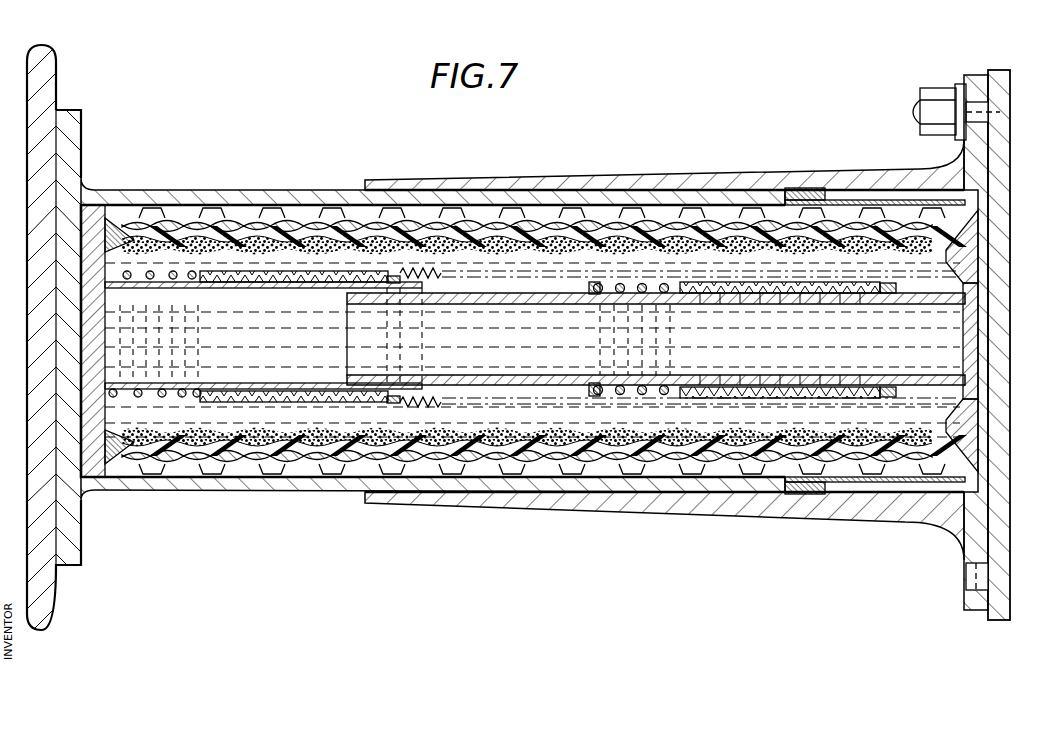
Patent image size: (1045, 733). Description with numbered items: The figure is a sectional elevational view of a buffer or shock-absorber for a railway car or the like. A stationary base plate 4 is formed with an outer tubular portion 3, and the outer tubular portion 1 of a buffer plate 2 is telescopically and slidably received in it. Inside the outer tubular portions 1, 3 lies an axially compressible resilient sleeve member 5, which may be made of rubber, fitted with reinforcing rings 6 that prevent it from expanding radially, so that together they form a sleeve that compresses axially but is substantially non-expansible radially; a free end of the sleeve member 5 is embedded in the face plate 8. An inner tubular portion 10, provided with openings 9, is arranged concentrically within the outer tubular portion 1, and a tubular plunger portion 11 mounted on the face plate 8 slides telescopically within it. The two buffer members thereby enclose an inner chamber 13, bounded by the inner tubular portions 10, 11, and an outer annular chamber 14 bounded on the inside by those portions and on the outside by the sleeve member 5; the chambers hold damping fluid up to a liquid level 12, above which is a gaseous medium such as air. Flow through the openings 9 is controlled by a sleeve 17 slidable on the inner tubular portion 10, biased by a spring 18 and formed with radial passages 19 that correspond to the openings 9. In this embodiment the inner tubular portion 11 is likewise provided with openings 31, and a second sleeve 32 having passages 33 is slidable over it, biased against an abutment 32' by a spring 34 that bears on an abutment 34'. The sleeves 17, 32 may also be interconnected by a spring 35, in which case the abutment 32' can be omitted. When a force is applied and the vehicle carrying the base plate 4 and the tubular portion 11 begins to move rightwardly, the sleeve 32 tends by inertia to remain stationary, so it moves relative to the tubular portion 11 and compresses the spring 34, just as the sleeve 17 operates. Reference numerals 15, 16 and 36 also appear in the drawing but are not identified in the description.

The outer tubular portion 1 is at (157, 482).
The buffer plate 2 is at (37, 450).
The outer tubular portion 3 is at (593, 504).
The stationary base plate 4 is at (997, 484).
The tubular resilient sleeve member 5 is at (438, 450).
The reinforcing rings 6 is at (283, 463).
The face plate 8 is at (973, 257).
The openings 9 is at (244, 283).
The inner tubular portion 10 is at (280, 285).
The tubular plunger portion 11 is at (480, 296).
The liquid level 12 is at (240, 246).
The inner chamber 13 is at (957, 340).
The outer annular chamber 14 is at (417, 240).
The upper corrugated tube 15 is at (357, 243).
The direction arrow 16 is at (125, 171).
The sleeve 17 is at (223, 403).
The spring 18 is at (110, 398).
The radial passages 19 is at (245, 402).
The openings 31 is at (748, 385).
The second sleeve 32 is at (780, 373).
The abutment 32' is at (911, 350).
The passages 33 is at (828, 390).
The spring 34 is at (655, 339).
The abutment 34' is at (578, 339).
The spring 35 is at (413, 435).
The spring guide 36 is at (375, 430).